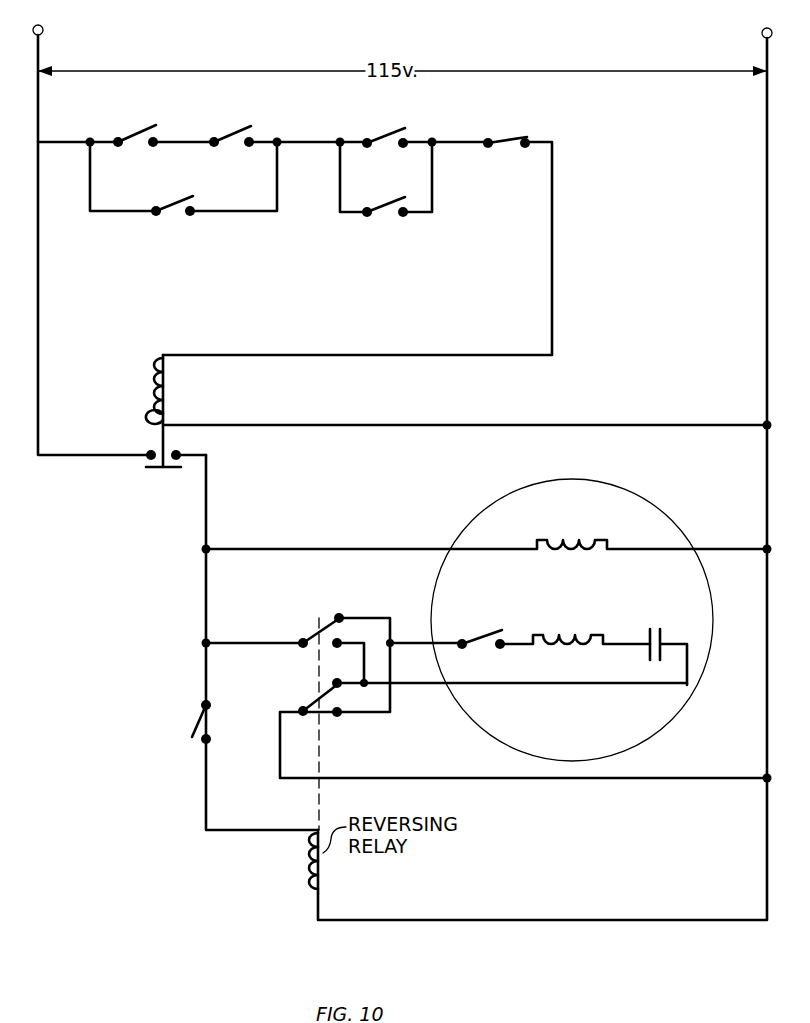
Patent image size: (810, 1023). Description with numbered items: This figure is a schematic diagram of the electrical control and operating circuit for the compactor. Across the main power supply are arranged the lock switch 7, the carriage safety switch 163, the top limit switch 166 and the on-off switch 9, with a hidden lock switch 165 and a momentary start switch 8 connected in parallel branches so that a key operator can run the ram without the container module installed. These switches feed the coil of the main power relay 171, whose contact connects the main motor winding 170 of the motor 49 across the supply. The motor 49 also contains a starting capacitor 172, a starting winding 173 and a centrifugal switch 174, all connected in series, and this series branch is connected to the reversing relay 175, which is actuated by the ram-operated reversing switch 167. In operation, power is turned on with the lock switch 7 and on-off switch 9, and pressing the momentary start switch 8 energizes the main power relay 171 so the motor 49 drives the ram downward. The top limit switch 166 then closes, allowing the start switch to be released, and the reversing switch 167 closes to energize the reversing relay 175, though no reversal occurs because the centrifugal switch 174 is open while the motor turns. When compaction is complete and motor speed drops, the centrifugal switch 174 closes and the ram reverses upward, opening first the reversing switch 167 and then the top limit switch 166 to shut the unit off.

The lock switch 7 is at (138, 135).
The safety switch 163 is at (205, 99).
The top limit switch 166 is at (398, 97).
The on-off switch 9 is at (518, 146).
The hidden lock switch 165 is at (173, 213).
The momentary start switch 8 is at (385, 210).
The main power relay 171 is at (152, 390).
The motor 49 is at (664, 514).
The main motor winding 170 is at (533, 539).
The centrifugal switch 174 is at (471, 632).
The starting capacitor 172 is at (662, 640).
The starting winding 173 is at (565, 653).
The reversing relay 175 is at (325, 655).
The reversing switch 167 is at (193, 727).